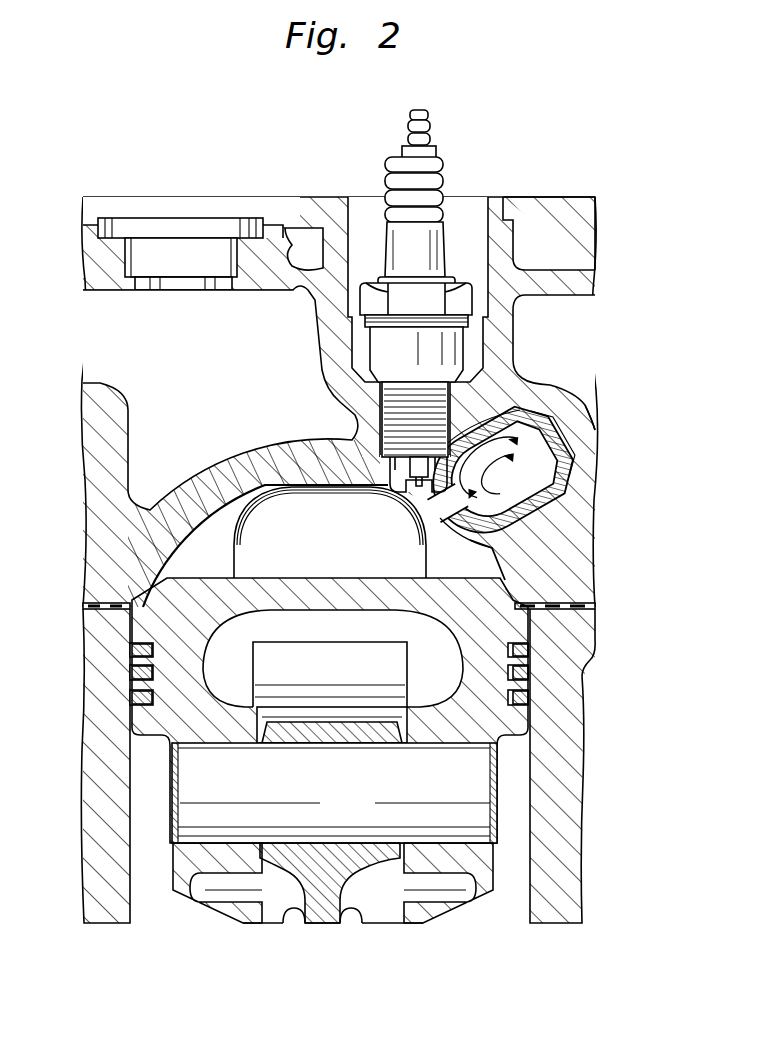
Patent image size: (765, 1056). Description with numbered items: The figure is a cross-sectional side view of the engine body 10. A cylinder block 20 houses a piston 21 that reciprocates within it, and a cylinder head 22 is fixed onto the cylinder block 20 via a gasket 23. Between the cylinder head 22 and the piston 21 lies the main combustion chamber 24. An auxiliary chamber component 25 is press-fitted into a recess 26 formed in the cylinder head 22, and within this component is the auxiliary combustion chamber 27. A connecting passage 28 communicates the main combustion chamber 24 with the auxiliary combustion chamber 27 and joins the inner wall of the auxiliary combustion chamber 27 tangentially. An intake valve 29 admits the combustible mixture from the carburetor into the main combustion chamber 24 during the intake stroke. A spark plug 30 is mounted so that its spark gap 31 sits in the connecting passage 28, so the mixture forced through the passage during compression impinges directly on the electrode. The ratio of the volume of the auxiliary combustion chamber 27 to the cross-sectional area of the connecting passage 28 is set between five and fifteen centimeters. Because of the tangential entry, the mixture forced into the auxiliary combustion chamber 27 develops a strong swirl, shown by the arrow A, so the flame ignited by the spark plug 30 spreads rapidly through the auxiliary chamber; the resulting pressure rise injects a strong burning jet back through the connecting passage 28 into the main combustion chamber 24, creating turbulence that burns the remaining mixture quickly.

The engine body 10 is at (620, 482).
The cylinder block 20 is at (570, 800).
The piston 21 is at (483, 705).
The cylinder head 22 is at (290, 458).
The gasket 23 is at (598, 584).
The main combustion chamber 24 is at (438, 575).
The auxiliary chamber component 25 is at (535, 415).
The recess 26 is at (487, 417).
The auxiliary combustion chamber 27 is at (489, 486).
The connecting passage 28 is at (483, 528).
The intake valve 29 is at (258, 530).
The spark plug 30 is at (440, 192).
The spark gap 31 is at (412, 488).
The arrow A is at (595, 433).